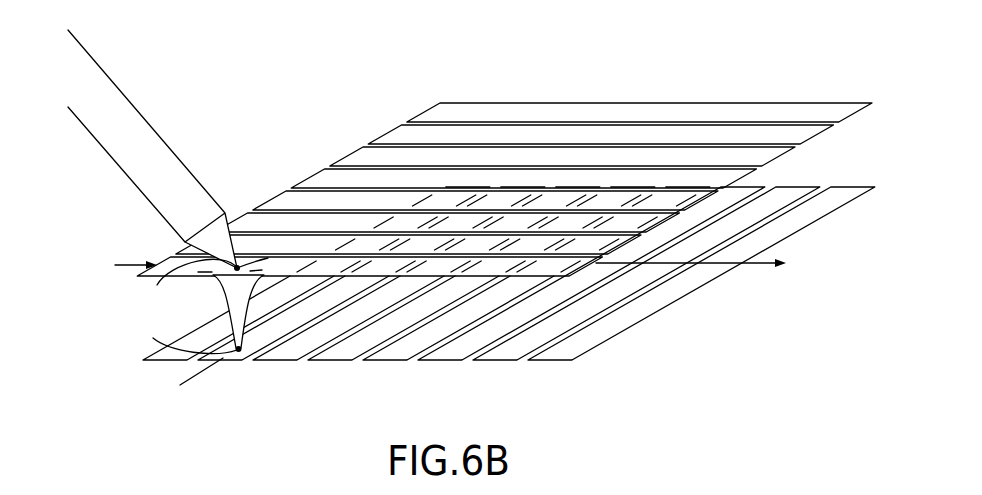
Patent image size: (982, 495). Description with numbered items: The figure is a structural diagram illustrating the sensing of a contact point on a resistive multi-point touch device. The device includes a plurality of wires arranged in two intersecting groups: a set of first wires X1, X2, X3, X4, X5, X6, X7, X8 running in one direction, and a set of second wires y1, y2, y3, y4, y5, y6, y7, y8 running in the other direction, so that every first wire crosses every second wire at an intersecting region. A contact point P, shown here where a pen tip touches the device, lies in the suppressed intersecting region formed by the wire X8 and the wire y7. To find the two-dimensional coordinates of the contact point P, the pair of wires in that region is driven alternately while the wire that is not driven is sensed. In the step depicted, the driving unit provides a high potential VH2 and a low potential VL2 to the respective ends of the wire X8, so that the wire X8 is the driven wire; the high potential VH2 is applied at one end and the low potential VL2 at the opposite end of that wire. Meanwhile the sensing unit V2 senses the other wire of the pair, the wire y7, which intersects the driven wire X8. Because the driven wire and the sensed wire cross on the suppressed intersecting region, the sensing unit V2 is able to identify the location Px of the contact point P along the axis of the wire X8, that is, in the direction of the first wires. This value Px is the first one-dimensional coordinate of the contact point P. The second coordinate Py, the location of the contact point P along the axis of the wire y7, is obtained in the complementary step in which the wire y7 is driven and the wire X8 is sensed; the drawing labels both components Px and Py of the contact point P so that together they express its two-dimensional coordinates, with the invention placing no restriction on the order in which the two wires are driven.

The first wire X1 is at (639, 113).
The first wire X2 is at (600, 135).
The first wire X3 is at (562, 157).
The first wire X4 is at (523, 179).
The first wire X5 is at (485, 201).
The first wire X6 is at (446, 223).
The first wire X7 is at (408, 245).
The first wire X8 is at (369, 266).
The second wire y1 is at (701, 273).
The second wire y2 is at (646, 273).
The second wire y3 is at (591, 273).
The second wire y4 is at (536, 273).
The second wire y5 is at (481, 273).
The second wire y6 is at (426, 273).
The second wire y7 is at (371, 273).
The second wire y8 is at (316, 273).
The high potential VH2 is at (109, 263).
The low potential VL2 is at (696, 278).
The sensing unit V2 is at (188, 385).
The contact point P is at (115, 283).
The first 1-D coordinate Px is at (195, 285).
The second 1-D coordinate Py is at (182, 334).